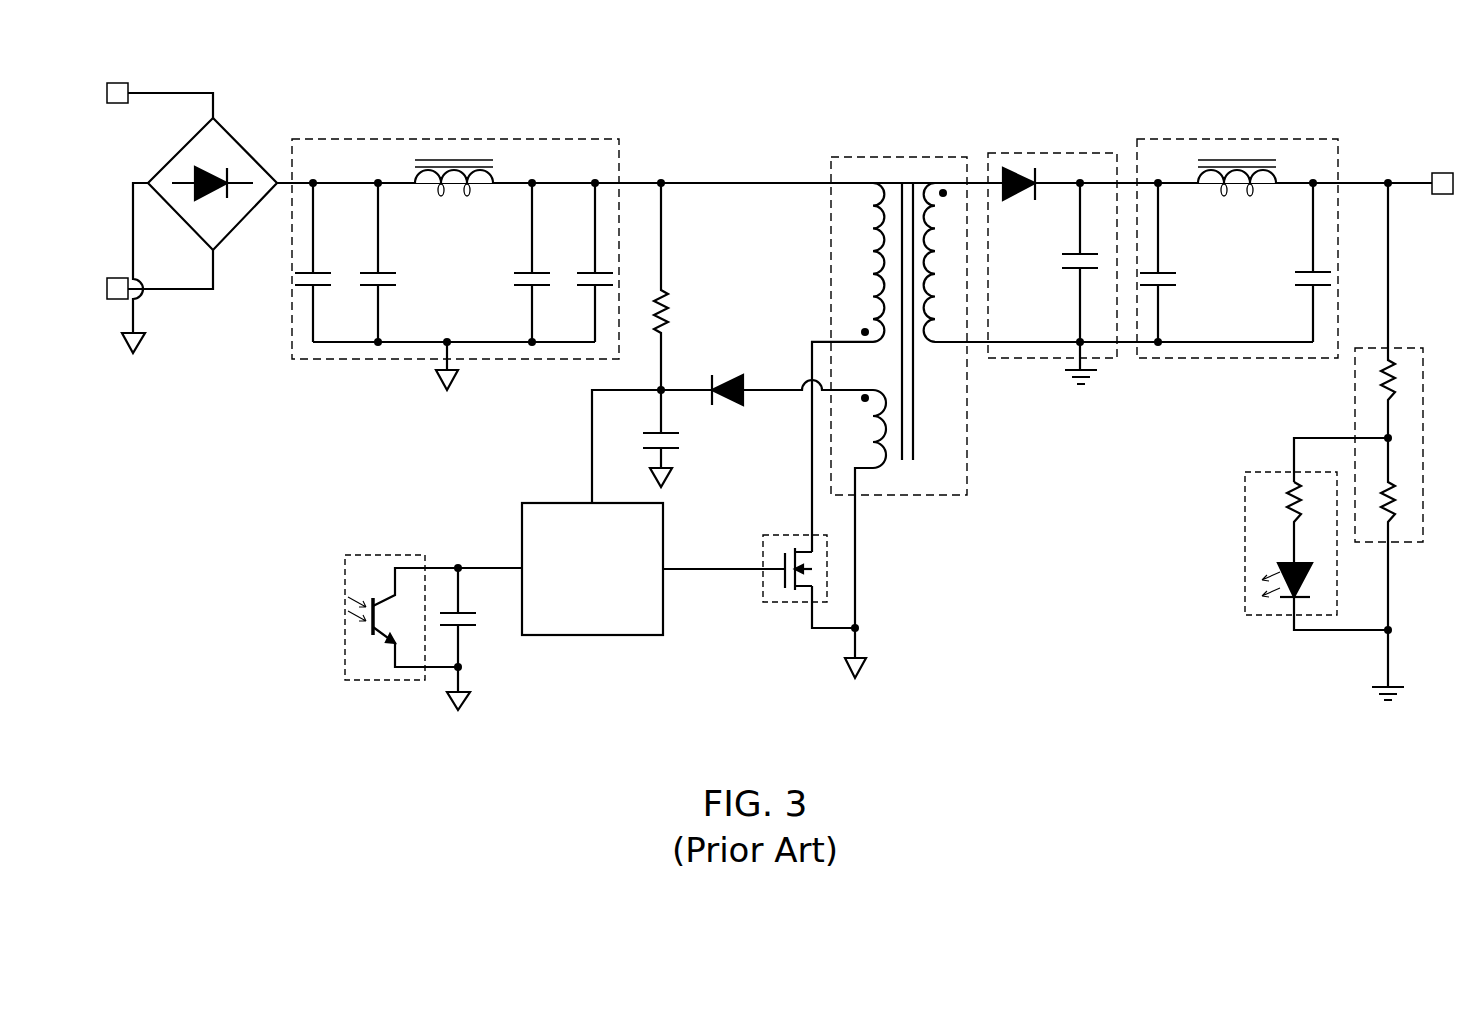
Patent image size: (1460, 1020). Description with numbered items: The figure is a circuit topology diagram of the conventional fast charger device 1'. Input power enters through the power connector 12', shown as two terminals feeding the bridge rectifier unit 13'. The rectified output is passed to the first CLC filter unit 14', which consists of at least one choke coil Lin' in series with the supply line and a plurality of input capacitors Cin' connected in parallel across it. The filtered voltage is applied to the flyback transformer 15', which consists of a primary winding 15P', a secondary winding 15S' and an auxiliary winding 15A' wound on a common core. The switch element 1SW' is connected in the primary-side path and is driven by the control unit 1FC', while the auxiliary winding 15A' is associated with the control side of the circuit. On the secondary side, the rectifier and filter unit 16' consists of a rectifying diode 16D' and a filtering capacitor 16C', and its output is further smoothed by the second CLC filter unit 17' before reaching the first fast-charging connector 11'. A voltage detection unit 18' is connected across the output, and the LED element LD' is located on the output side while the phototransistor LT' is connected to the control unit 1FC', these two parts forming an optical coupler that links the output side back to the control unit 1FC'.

The conventional fast charger device 1' is at (185, 570).
The first fast-charging connector 11' is at (1415, 147).
The power connector 12' is at (146, 191).
The bridge rectifier unit 13' is at (231, 162).
The first CLC filter unit 14' is at (464, 239).
The flyback transformer 15' is at (894, 349).
The primary winding 15P' is at (816, 314).
The secondary winding 15S' is at (982, 323).
The auxiliary winding 15A' is at (918, 509).
The rectifier and filter unit 16' is at (1083, 226).
The rectifying diode 16D' is at (1050, 149).
The filtering capacitor 16C' is at (1046, 281).
The second CLC filter unit 17' is at (1269, 205).
The voltage detection unit 18' is at (1308, 439).
The switch element 1SW' is at (764, 574).
The control unit 1FC' is at (632, 610).
The phototransistor LT' is at (395, 632).
The LED element LD' is at (1278, 581).
The input capacitors Cin' is at (430, 302).
The choke coil Lin' is at (454, 194).